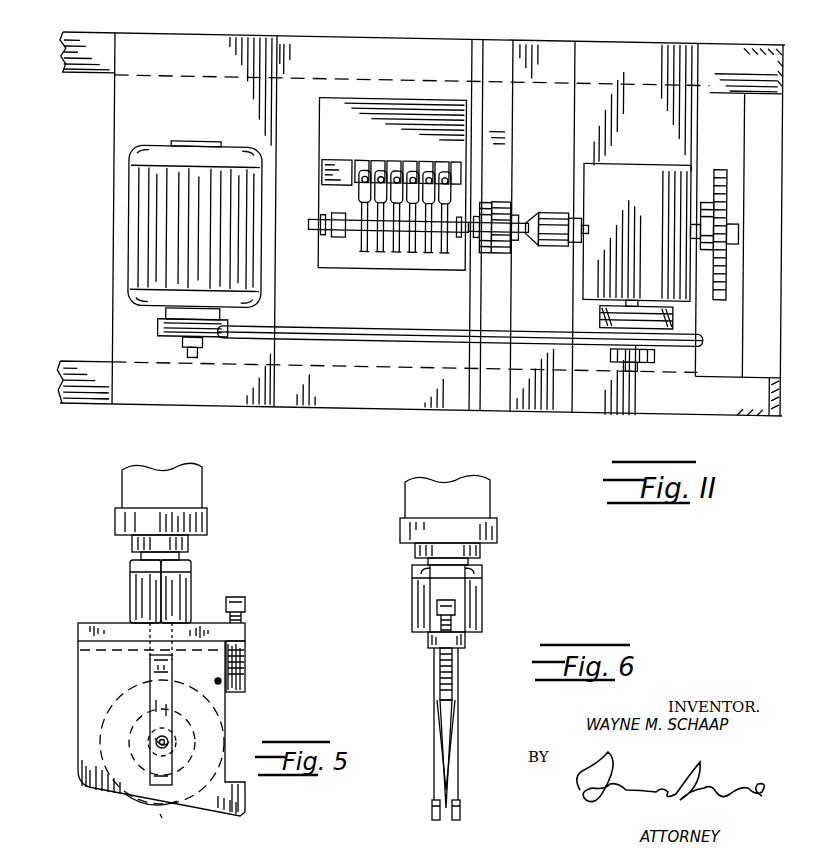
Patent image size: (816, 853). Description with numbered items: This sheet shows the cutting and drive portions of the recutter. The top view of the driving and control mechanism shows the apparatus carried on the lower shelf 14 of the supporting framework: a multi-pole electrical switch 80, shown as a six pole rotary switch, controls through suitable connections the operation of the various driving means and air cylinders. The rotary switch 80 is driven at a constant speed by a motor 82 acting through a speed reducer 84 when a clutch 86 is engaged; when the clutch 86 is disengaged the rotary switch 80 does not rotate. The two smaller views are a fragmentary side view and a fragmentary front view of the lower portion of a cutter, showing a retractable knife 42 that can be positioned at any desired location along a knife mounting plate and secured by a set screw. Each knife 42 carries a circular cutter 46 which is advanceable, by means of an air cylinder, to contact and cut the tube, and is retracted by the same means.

In FIG. 11, the lower shelf 14 is at (100, 37).
In FIG. 11, the motor 82 is at (138, 216).
In FIG. 11, the multi-pole electrical switch 80 is at (392, 157).
In FIG. 11, the clutch 86 is at (500, 206).
In FIG. 11, the speed reducer 84 is at (614, 168).
In FIG. 5, the retractable knife 42 is at (200, 512).
In FIG. 6, the retractable knife 42 is at (400, 524).
In FIG. 5, the circular cutter 46 is at (132, 800).
In FIG. 6, the circular cutter 46 is at (446, 768).